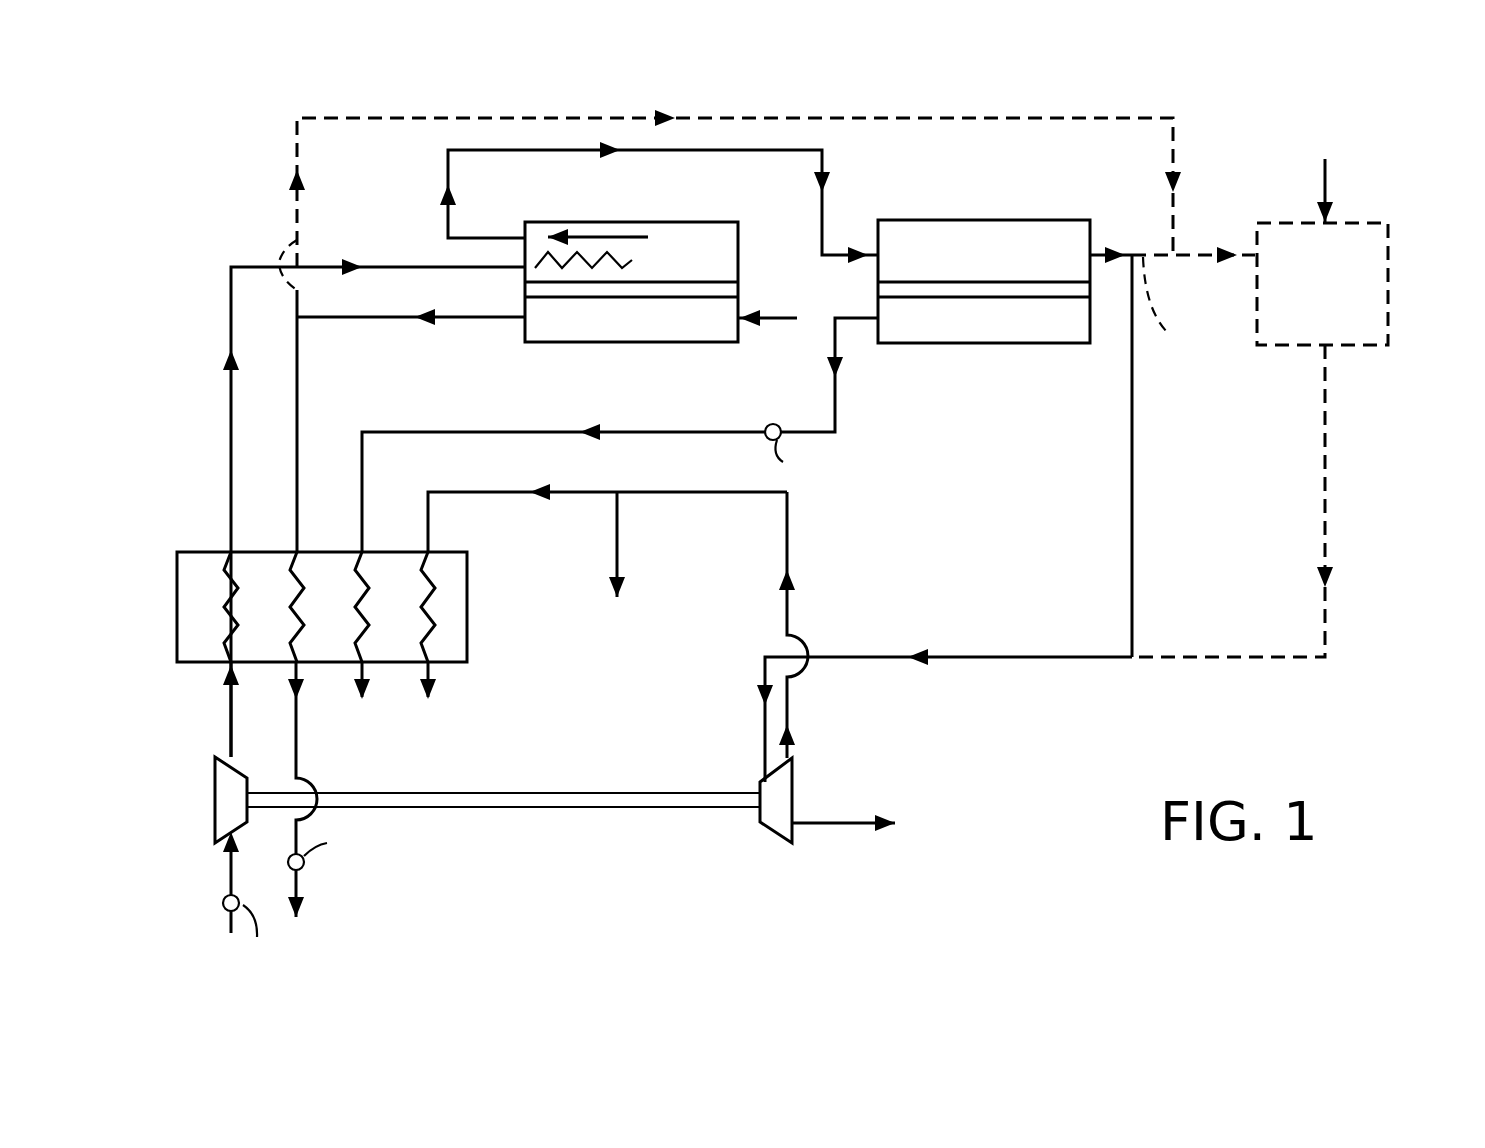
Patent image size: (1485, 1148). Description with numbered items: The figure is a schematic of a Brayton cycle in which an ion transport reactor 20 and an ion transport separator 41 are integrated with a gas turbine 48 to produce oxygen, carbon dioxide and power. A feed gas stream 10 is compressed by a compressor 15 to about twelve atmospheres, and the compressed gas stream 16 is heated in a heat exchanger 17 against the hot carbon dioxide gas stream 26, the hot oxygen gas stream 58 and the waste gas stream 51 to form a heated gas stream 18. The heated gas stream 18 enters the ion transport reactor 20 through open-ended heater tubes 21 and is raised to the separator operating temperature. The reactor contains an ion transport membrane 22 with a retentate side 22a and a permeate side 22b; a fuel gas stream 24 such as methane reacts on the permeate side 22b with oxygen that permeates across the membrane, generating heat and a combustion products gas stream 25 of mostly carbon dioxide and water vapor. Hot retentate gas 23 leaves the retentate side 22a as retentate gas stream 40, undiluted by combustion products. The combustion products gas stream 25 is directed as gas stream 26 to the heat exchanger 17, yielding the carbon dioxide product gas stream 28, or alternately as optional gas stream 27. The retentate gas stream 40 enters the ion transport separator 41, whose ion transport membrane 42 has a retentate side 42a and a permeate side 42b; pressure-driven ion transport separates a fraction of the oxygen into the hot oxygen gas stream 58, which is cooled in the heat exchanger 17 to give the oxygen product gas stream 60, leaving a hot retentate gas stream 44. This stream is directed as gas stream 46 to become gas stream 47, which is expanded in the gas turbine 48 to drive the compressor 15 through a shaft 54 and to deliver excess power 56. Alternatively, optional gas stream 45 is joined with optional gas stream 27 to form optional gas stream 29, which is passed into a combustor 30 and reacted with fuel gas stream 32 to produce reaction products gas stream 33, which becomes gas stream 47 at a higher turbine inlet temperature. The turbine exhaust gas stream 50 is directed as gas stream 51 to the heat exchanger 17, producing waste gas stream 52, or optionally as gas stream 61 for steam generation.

The feed gas stream 10 is at (230, 868).
The compressor 15 is at (213, 790).
The compressed gas stream 16 is at (230, 712).
The heat exchanger 17 is at (467, 582).
The heated gas stream 18 is at (228, 432).
The ion transport reactor 20 is at (662, 215).
The open-ended heater tubes 21 is at (632, 267).
The ion transport membrane 22 is at (659, 305).
The retentate side 22a is at (720, 280).
The permeate side 22b is at (645, 297).
The hot retentate gas 23 is at (592, 233).
The fuel gas stream 24 is at (777, 318).
The combustion products gas stream 25 is at (342, 318).
The hot carbon dioxide gas stream 26 is at (297, 413).
The optional gas stream 27 is at (300, 240).
The carbon dioxide product gas stream 28 is at (297, 733).
The optional gas stream 29 is at (1193, 257).
The combustor 30 is at (1388, 310).
The fuel gas stream 32 is at (1330, 192).
The reaction products gas stream 33 is at (1327, 478).
The retentate gas stream 40 is at (450, 174).
The ion transport separator 41 is at (942, 220).
The ion transport membrane 42 is at (947, 288).
The retentate side 42a is at (997, 280).
The permeate side 42b is at (1012, 297).
The hot retentate gas stream 44 is at (1097, 250).
The optional gas stream 45 is at (1180, 308).
The gas stream 46 is at (1134, 466).
The gas stream 47 is at (1000, 640).
The gas turbine 48 is at (795, 784).
The exhaust gas stream 50 is at (788, 705).
The waste gas stream 51 is at (470, 490).
The waste gas stream 52 is at (430, 675).
The shaft 54 is at (622, 808).
The excess power 56 is at (820, 824).
The hot oxygen gas stream 58 is at (836, 393).
The oxygen product gas stream 60 is at (365, 672).
The gas stream 61 is at (618, 546).